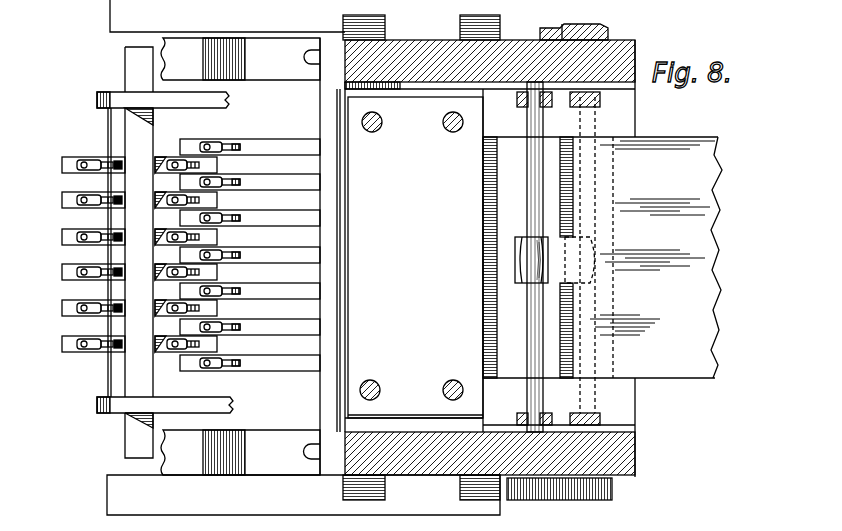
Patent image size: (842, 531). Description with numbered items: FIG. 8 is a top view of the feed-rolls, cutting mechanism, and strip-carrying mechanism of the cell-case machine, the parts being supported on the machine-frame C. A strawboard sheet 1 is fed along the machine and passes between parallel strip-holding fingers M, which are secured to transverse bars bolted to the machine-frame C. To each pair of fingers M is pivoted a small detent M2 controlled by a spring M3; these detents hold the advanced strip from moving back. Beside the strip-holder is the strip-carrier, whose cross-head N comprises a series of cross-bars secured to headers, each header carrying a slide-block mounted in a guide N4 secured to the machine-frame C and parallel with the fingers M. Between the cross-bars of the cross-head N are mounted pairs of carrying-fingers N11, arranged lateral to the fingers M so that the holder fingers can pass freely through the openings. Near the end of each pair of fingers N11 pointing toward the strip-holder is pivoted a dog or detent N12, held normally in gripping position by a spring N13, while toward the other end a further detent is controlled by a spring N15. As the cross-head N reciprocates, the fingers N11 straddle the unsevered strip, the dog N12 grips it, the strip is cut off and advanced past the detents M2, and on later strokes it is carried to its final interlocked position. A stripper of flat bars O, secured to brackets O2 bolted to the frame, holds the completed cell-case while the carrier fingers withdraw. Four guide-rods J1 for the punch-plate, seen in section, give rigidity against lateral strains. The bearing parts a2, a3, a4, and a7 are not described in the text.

The guide N4 is at (106, 24).
The cross-head N is at (125, 75).
The flat bars O is at (108, 138).
The brackets O2 is at (165, 252).
The fingers N11 is at (62, 165).
The spring N15 is at (83, 200).
The dog or detent N12 is at (188, 310).
The spring N13 is at (175, 305).
The strip-holding fingers M is at (272, 147).
The detent M2 is at (230, 218).
The spring M3 is at (228, 142).
The guide-rods J1 is at (446, 129).
The machine-frame C is at (499, 257).
The hub a2 is at (545, 262).
The bearing a3 is at (527, 207).
The cap a4 is at (569, 27).
The cap a7 is at (565, 500).
The strawboard sheet 1 is at (661, 257).